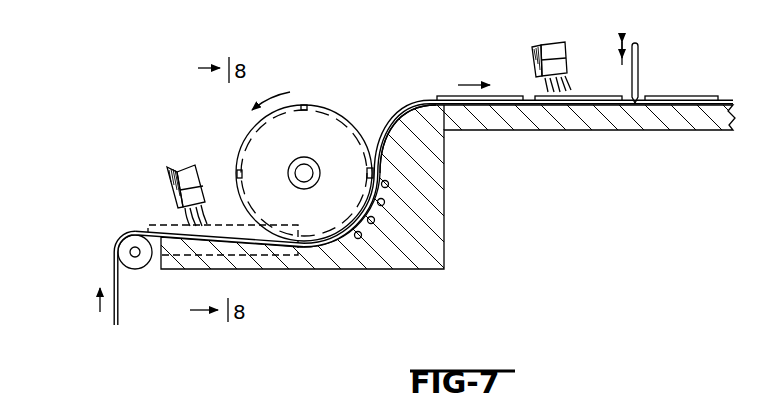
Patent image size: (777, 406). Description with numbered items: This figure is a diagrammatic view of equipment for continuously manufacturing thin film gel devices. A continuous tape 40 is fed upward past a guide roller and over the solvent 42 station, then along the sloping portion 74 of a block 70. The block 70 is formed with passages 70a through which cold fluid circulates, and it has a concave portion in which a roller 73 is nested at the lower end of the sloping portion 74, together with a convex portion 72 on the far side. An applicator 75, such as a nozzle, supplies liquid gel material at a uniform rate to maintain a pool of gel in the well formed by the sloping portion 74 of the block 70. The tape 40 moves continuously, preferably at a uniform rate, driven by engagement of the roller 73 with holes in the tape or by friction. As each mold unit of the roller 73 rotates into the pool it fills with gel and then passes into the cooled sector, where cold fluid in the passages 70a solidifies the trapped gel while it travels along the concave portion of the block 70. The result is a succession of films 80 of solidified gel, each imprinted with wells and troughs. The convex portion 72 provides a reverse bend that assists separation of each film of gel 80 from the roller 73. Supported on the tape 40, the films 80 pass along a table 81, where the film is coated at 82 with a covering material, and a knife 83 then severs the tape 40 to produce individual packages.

The continuous tape 40 is at (115, 318).
The solvent 42 is at (128, 244).
The block 70 is at (358, 270).
The passages 70a is at (384, 205).
The convex portion 72 is at (387, 135).
The roller 73 is at (312, 128).
The sloping portion 74 is at (237, 242).
The applicator 75 is at (187, 175).
The films of gel 80 is at (396, 116).
The table 81 is at (557, 130).
The coating station 82 is at (561, 43).
The knife 83 is at (640, 70).